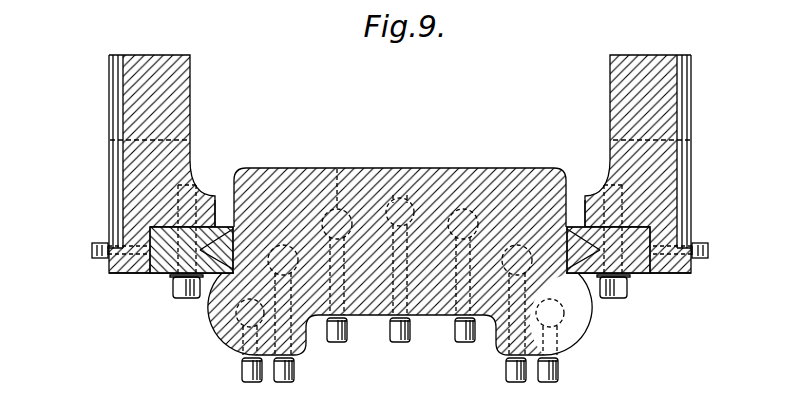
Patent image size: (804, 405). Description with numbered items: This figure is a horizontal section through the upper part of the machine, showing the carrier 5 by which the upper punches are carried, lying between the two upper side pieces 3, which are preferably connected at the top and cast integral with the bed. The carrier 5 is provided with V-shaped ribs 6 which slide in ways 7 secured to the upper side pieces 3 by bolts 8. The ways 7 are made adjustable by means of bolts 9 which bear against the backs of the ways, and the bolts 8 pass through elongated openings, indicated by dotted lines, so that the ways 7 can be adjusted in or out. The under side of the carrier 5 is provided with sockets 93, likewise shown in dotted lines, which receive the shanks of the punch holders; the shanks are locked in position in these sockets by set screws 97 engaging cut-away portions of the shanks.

The upper side pieces 3 is at (133, 87).
The carrier 5 is at (489, 170).
The V-shaped ribs 6 is at (224, 222).
The ways 7 is at (161, 275).
The bolts 8 is at (193, 299).
The bolts 9 is at (93, 245).
The sockets 93 is at (338, 165).
The set screws 97 is at (461, 343).